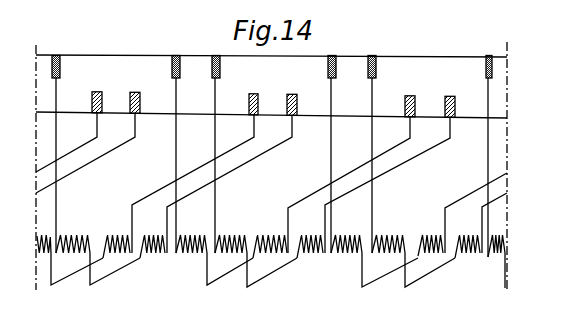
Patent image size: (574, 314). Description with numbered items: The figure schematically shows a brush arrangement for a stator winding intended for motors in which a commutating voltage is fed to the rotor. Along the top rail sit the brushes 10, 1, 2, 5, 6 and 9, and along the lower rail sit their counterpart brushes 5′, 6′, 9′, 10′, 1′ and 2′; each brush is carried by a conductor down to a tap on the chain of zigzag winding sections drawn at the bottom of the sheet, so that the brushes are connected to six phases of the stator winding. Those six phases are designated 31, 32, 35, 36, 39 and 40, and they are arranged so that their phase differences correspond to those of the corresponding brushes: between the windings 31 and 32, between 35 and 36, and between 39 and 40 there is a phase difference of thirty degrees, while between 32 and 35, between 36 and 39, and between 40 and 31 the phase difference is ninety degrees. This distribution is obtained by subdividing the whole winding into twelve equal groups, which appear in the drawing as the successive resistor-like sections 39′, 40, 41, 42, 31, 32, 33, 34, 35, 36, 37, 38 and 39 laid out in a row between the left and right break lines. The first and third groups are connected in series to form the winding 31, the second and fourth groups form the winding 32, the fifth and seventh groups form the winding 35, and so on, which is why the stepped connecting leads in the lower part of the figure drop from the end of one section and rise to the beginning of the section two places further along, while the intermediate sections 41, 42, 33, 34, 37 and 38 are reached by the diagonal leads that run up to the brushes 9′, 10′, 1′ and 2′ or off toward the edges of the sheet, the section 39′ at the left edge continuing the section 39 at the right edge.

The brush 10 is at (61, 70).
The brush 1 is at (181, 70).
The brush 2 is at (221, 70).
The brush 5 is at (337, 70).
The brush 6 is at (377, 70).
The brush 9 is at (493, 70).
The brush 5′ is at (103, 104).
The brush 6′ is at (141, 104).
The brush 9′ is at (259, 106).
The brush 10′ is at (298, 106).
The brush 1′ is at (416, 108).
The brush 2′ is at (456, 108).
The winding section 39′ is at (40, 237).
The stator winding phase 40 is at (73, 234).
The winding group 41 is at (117, 236).
The winding group 42 is at (152, 236).
The stator winding phase 31 is at (191, 234).
The stator winding phase 32 is at (231, 234).
The winding group 33 is at (270, 236).
The winding group 34 is at (310, 236).
The stator winding phase 35 is at (346, 234).
The stator winding phase 36 is at (388, 234).
The winding group 37 is at (430, 235).
The winding group 38 is at (467, 236).
The stator winding phase 39 is at (498, 238).